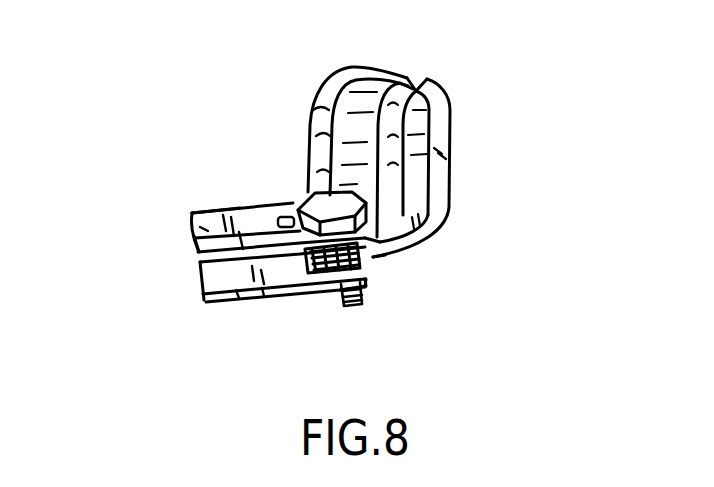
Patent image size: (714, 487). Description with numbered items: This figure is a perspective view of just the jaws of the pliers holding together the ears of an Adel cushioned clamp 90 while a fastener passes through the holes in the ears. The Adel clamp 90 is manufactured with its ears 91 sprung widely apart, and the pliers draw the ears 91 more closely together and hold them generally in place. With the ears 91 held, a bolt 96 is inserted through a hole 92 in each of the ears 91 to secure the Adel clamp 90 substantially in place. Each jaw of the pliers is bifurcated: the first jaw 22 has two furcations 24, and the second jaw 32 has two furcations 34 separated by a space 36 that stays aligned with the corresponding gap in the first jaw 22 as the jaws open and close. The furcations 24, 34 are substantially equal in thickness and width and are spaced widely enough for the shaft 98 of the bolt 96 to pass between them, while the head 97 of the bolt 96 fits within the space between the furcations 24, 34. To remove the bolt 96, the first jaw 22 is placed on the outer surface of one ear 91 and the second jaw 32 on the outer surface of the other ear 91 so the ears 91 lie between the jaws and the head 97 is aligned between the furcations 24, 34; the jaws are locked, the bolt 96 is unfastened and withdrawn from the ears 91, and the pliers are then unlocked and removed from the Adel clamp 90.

The first jaw 22 is at (203, 280).
The furcations 24 is at (385, 279).
The second jaw 32 is at (193, 221).
The furcations 34 is at (300, 206).
The space 36 is at (189, 248).
The Adel clamp 90 is at (421, 84).
The ears 91 is at (324, 282).
The hole 92 is at (385, 255).
The bolt 96 is at (234, 320).
The head 97 is at (314, 196).
The shaft 98 is at (350, 304).